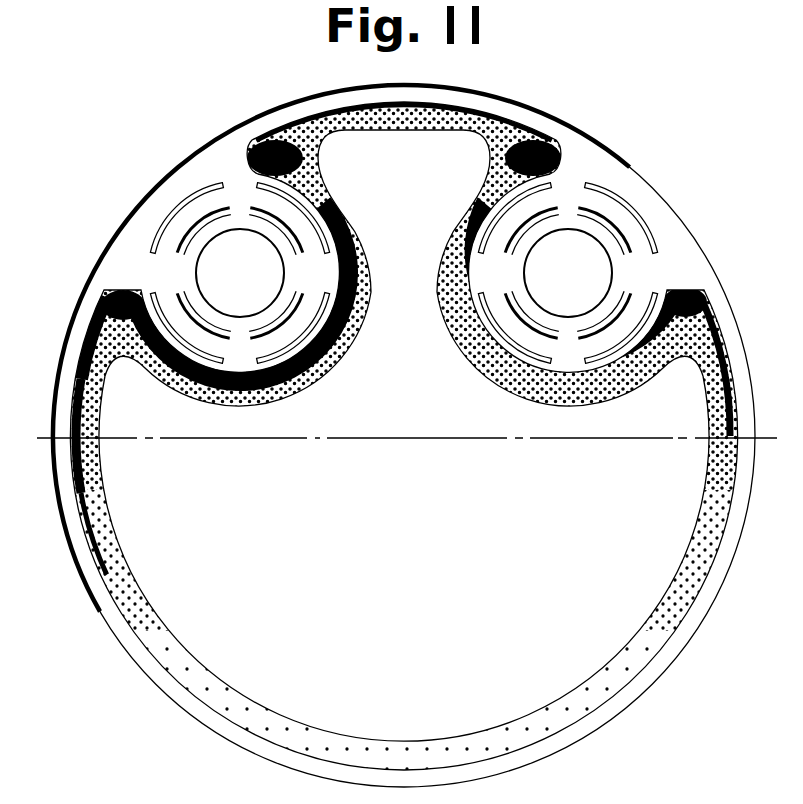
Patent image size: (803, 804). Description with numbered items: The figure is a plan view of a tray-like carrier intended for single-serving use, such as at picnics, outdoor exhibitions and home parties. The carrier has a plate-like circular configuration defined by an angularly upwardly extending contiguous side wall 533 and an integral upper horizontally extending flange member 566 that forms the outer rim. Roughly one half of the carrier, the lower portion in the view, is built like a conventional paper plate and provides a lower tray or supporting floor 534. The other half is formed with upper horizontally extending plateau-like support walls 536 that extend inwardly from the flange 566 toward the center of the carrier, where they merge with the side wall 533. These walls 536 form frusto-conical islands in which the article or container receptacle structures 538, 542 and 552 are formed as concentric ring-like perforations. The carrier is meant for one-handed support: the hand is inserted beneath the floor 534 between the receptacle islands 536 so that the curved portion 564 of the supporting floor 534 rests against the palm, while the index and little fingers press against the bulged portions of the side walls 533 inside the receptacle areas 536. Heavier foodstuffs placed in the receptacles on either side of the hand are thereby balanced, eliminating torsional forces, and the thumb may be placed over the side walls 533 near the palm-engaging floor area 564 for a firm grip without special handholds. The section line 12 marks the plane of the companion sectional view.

The section line 12— 12 is at (28, 396).
The side wall 533 is at (242, 707).
The supporting floor 534 is at (424, 465).
The plateau-like support walls 536 is at (403, 258).
The container receptacle structure 538 is at (206, 297).
The container receptacle structure 542 is at (171, 267).
The container receptacle structure 552 is at (654, 241).
The curved portion of the supporting floor 564 is at (421, 197).
The flange member 566 is at (281, 758).